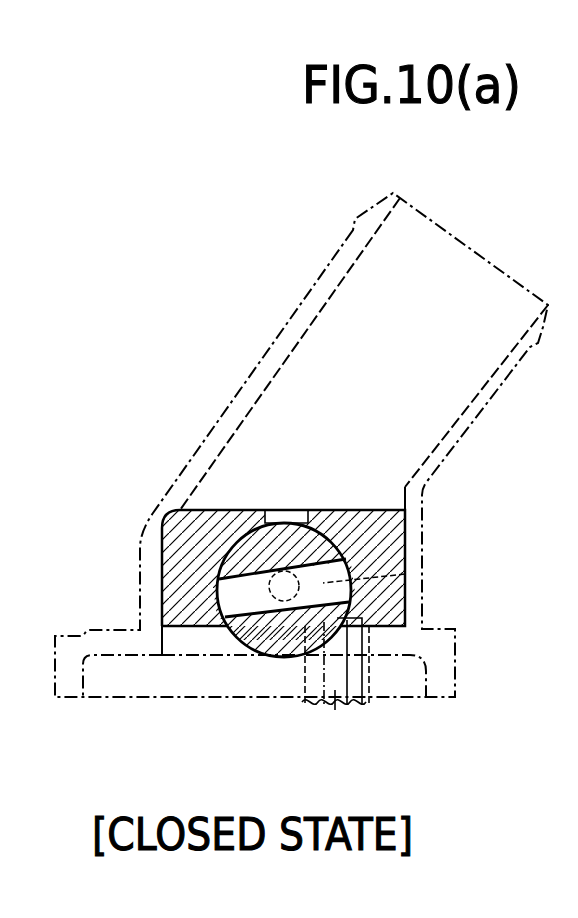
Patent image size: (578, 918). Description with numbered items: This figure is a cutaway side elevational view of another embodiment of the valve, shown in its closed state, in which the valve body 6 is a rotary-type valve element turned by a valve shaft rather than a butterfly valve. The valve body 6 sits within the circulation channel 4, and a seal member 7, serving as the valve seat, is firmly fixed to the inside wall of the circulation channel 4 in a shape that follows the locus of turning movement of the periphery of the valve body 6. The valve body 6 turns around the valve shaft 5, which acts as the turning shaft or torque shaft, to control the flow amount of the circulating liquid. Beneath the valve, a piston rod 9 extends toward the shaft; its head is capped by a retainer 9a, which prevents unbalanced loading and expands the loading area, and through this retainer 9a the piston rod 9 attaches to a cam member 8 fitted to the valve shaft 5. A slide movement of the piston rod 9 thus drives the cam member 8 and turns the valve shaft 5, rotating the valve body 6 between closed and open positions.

The circulation channel 4 is at (497, 386).
The valve shaft 5 is at (269, 587).
The valve body 6 is at (240, 632).
The seal member 7 is at (170, 522).
The cam member 8 is at (405, 574).
The piston rod 9 is at (333, 712).
The retainer 9a is at (368, 668).